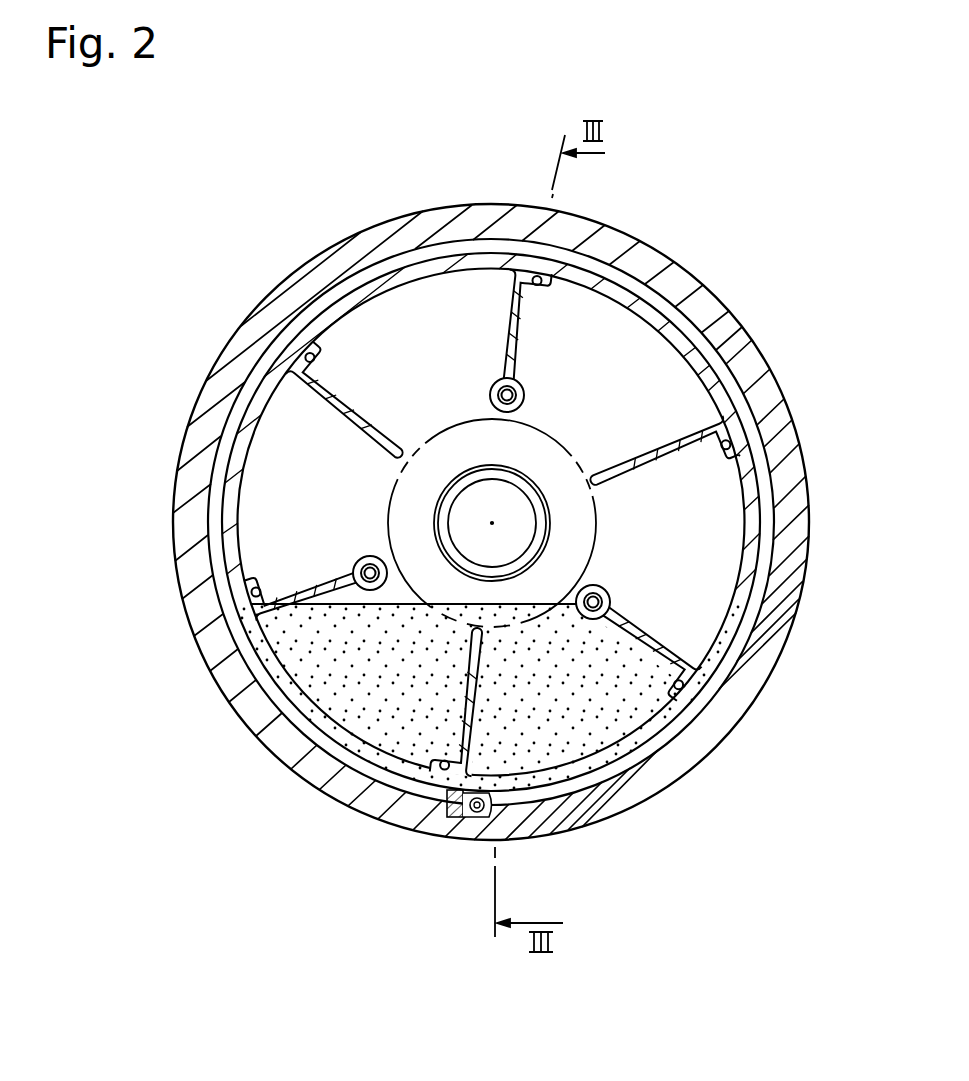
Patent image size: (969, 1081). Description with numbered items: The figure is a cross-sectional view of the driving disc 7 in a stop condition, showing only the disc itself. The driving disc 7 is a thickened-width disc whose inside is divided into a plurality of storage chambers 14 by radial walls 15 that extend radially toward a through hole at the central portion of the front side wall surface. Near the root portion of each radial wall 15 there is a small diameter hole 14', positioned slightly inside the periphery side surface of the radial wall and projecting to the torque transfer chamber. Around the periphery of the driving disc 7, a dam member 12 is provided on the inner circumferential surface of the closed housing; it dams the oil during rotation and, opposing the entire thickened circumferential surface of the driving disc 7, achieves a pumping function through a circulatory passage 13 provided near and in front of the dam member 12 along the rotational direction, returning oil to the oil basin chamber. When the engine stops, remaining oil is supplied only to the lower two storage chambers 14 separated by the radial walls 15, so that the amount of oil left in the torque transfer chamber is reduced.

The driving disc 7 is at (757, 537).
The dam member 12 is at (450, 809).
The circulatory passage 13 is at (463, 816).
The storage chamber 14 is at (584, 539).
The small diameter hole 14' is at (496, 538).
The radial wall 15 is at (645, 440).